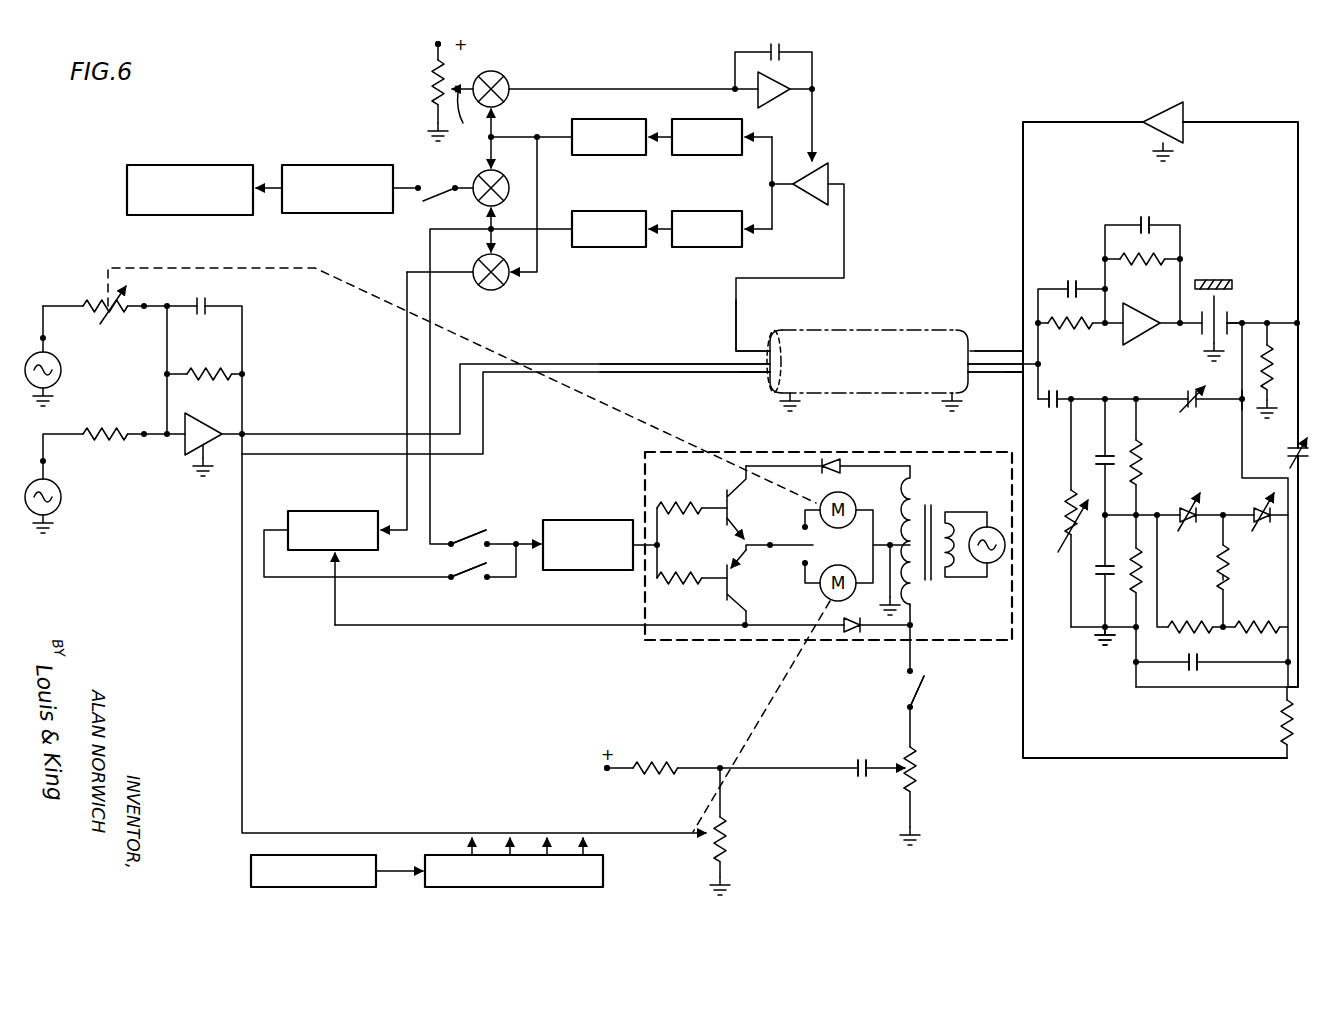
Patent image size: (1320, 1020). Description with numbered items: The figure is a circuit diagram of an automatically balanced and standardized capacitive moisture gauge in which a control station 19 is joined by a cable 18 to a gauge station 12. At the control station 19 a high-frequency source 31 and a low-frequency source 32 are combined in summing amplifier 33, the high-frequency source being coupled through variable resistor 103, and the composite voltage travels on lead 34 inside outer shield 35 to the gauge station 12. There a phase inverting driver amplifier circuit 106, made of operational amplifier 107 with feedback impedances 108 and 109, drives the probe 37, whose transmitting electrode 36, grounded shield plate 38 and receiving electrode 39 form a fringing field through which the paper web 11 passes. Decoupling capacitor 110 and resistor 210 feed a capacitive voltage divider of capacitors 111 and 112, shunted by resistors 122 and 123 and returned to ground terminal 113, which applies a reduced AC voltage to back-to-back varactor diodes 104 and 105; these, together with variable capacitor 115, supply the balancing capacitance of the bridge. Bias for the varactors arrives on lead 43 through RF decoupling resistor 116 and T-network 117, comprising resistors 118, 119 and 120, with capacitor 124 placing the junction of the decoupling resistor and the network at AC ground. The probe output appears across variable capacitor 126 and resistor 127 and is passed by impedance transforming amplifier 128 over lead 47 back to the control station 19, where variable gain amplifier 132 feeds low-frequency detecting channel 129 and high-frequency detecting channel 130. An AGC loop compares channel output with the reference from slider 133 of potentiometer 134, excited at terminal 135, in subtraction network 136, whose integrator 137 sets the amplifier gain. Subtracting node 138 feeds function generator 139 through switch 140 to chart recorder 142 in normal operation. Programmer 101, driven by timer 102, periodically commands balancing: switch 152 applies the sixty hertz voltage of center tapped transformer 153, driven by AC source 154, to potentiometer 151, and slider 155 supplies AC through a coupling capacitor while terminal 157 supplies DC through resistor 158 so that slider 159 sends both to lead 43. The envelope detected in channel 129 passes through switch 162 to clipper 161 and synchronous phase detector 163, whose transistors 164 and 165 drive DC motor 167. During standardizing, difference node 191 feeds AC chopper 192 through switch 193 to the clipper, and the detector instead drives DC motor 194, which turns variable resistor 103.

The web 11 is at (1222, 281).
The gauge station 12 is at (1110, 82).
The cable 18 is at (843, 394).
The control station 19 is at (164, 296).
The high-frequency AC source 31 is at (62, 506).
The low-frequency AC source 32 is at (62, 374).
The summing amplifier 33 is at (178, 480).
The lead 34 is at (716, 356).
The outer shield 35 is at (946, 326).
The transmitting electrode 36 is at (1200, 329).
The capacitive moisture measuring probe 37 is at (1243, 308).
The grounded shield plate 38 is at (1210, 343).
The receiving electrode 39 is at (1226, 390).
The lead 43 is at (745, 375).
The lead 47 is at (756, 350).
The programmer 101 is at (530, 888).
The timer 102 is at (323, 888).
The variable resistor 103 is at (88, 296).
The varactor diode 104 is at (1178, 508).
The varactor diode 105 is at (1250, 512).
The phase inverting driver amplifier circuit 106 is at (1097, 262).
The operational amplifier 107 is at (1130, 308).
The feedback impedance 108 is at (1182, 240).
The feedback impedance 109 is at (1062, 285).
The decoupling capacitor 110 is at (1053, 396).
The capacitor 111 is at (1100, 453).
The capacitor 112 is at (1085, 583).
The ground terminal 113 is at (1098, 640).
The variable capacitor 115 is at (1185, 396).
The RF decoupling resistor 116 is at (1283, 728).
The T-network 117 is at (1233, 580).
The resistor 118 is at (1270, 623).
The resistor 119 is at (1186, 622).
The resistor 120 is at (1228, 551).
The resistor 122 is at (1140, 476).
The resistor 123 is at (1130, 561).
The capacitor 124 is at (1200, 663).
The variable load capacitor 126 is at (1290, 456).
The load resistor 127 is at (1276, 359).
The impedance transforming amplifier 128 is at (1185, 109).
The low-frequency detecting channel 129 is at (668, 248).
The high-frequency detecting channel 130 is at (652, 160).
The variable gain amplifier 132 is at (830, 169).
The slider 133 is at (448, 114).
The potentiometer 134 is at (428, 89).
The terminal 135 is at (432, 44).
The subtraction network 136 is at (504, 77).
The integrator 137 is at (768, 106).
The subtracting node 138 is at (500, 197).
The function generator 139 is at (356, 164).
The switch 140 is at (422, 201).
The chart recorder 142 is at (204, 164).
The potentiometer 151 is at (910, 776).
The switch 152 is at (922, 706).
The center tapped transformer 153 is at (937, 504).
The AC source 154 is at (1000, 561).
The slider 155 is at (875, 760).
The terminal 157 is at (601, 766).
The resistor / coupling capacitor 158 is at (626, 779).
The slider 159 is at (699, 839).
The clipper 161 is at (615, 518).
The switch 162 is at (471, 531).
The synchronous full wave phase detector 163 is at (1000, 648).
The transistor 164 is at (724, 492).
The transistor 165 is at (726, 598).
The DC motor 167 is at (822, 594).
The difference node 191 is at (492, 290).
The AC chopper 192 is at (354, 510).
The switch 193 is at (465, 579).
The DC motor 194 is at (853, 500).
The resistor 210 is at (1060, 546).